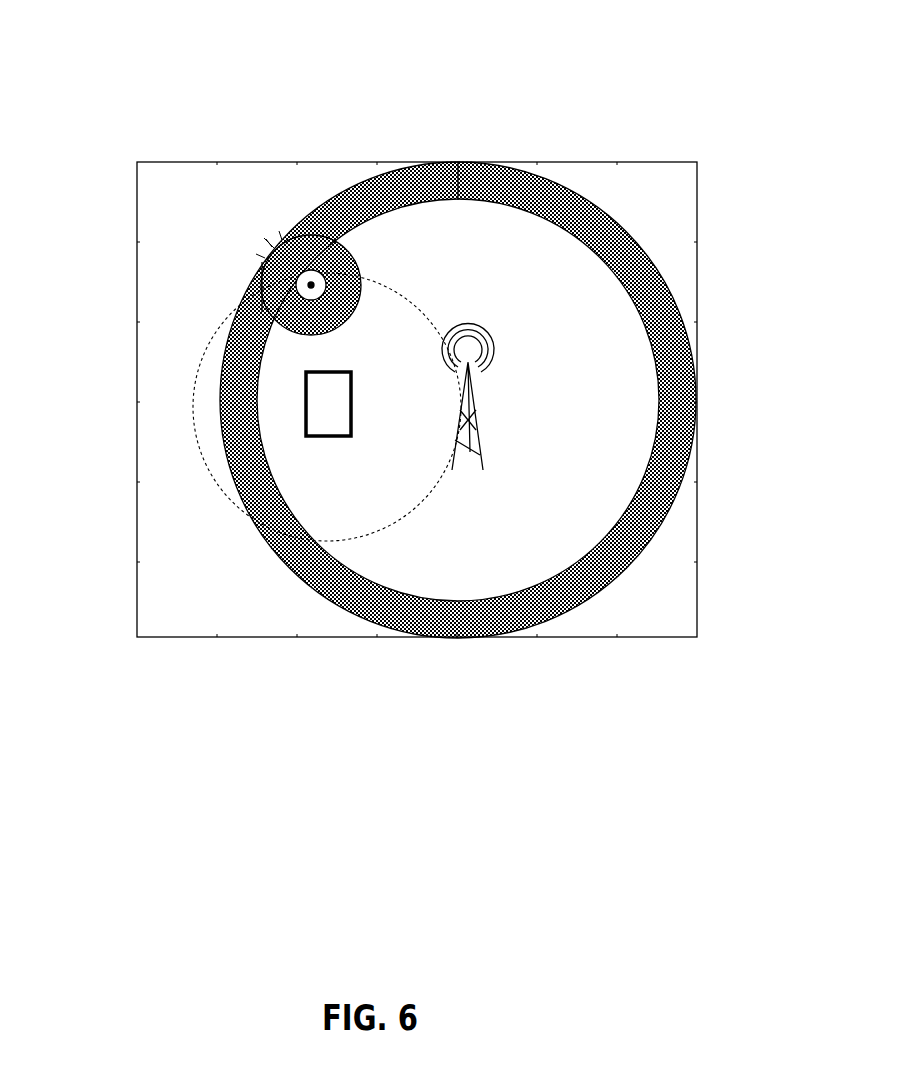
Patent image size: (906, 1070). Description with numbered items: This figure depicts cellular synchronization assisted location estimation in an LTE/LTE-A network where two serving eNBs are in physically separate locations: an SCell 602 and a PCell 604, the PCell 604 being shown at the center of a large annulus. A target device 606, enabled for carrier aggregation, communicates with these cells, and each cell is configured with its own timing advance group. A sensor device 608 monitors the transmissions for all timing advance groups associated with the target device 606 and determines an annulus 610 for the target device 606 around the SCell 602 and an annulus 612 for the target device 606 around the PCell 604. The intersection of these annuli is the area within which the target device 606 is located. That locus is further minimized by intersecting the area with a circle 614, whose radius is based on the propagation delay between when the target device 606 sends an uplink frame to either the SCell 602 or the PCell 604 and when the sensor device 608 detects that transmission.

The SCell 602 is at (310, 287).
The PCell 604 is at (490, 350).
The target device 606 is at (268, 282).
The sensor device 608 is at (303, 402).
The annulus 610 is at (337, 250).
The annulus 612 is at (656, 510).
The circle 614 is at (222, 488).